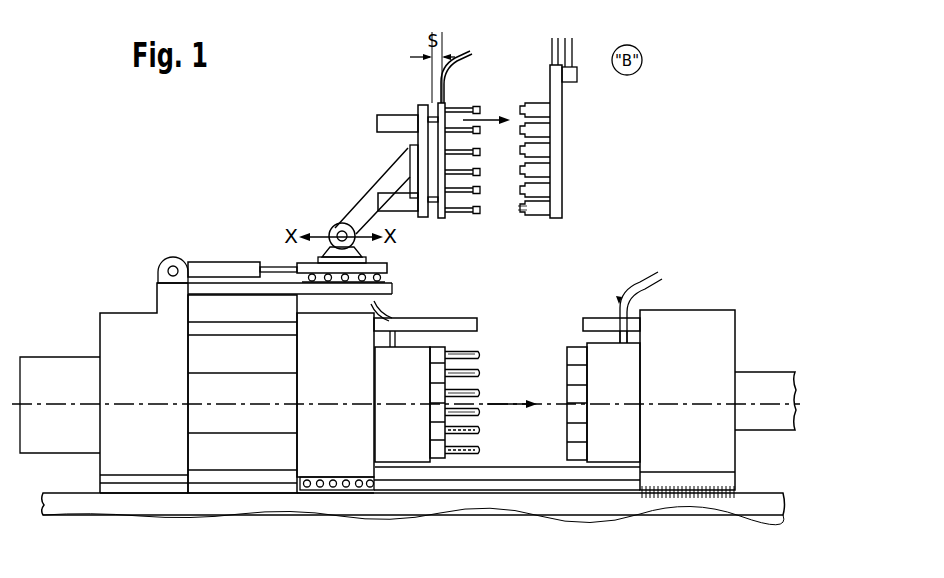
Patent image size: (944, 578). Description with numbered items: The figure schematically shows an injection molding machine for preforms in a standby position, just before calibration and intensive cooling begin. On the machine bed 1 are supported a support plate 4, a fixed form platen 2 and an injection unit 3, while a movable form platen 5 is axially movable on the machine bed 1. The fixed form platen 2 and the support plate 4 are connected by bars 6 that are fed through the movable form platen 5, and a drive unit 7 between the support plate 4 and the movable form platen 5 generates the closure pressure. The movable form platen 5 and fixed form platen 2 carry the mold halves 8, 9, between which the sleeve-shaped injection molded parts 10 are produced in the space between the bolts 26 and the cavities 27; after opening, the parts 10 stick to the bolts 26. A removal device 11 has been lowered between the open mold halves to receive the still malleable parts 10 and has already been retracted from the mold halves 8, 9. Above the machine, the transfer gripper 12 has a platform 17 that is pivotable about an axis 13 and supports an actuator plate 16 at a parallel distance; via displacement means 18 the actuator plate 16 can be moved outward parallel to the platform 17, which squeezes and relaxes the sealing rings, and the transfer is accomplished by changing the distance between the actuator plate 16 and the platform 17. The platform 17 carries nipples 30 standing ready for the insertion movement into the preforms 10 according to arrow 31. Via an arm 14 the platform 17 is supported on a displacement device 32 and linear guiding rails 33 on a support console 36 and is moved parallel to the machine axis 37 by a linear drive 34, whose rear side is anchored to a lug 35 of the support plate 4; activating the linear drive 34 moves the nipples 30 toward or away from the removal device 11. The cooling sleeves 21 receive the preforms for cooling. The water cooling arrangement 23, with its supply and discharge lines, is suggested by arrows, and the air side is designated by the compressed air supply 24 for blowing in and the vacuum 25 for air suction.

The machine bed 1 is at (589, 500).
The fixed form platen 2 is at (679, 372).
The injection unit 3 is at (758, 378).
The support plate 4 is at (123, 337).
The movable form platen 5 is at (327, 382).
The bars 6 is at (457, 318).
The drive unit 7 is at (230, 402).
The mold half 8 is at (397, 387).
The mold half 9 is at (602, 385).
The injection molded parts 10 is at (468, 458).
The removal device 11 is at (572, 136).
The transfer gripper 12 is at (362, 136).
The axis 13 is at (338, 228).
The arm 14 is at (392, 180).
The actuator plate 16 is at (445, 218).
The platform 17 is at (423, 108).
The displacement means 18 is at (390, 118).
The cooling sleeves 21 is at (540, 212).
The water cooling arrangement 23 is at (648, 268).
The compressed air supply 24 is at (490, 44).
The vacuum 25 is at (457, 70).
The bolts 26 is at (481, 393).
The cavities 27 is at (567, 428).
The nipples 30 is at (463, 103).
The arrow 31 is at (489, 127).
The displacement device 32 is at (246, 242).
The linear guiding rails 33 is at (400, 275).
The linear drive 34 is at (208, 266).
The bracket 35 is at (168, 260).
The support console 36 is at (275, 288).
The machine axis 37 is at (144, 400).